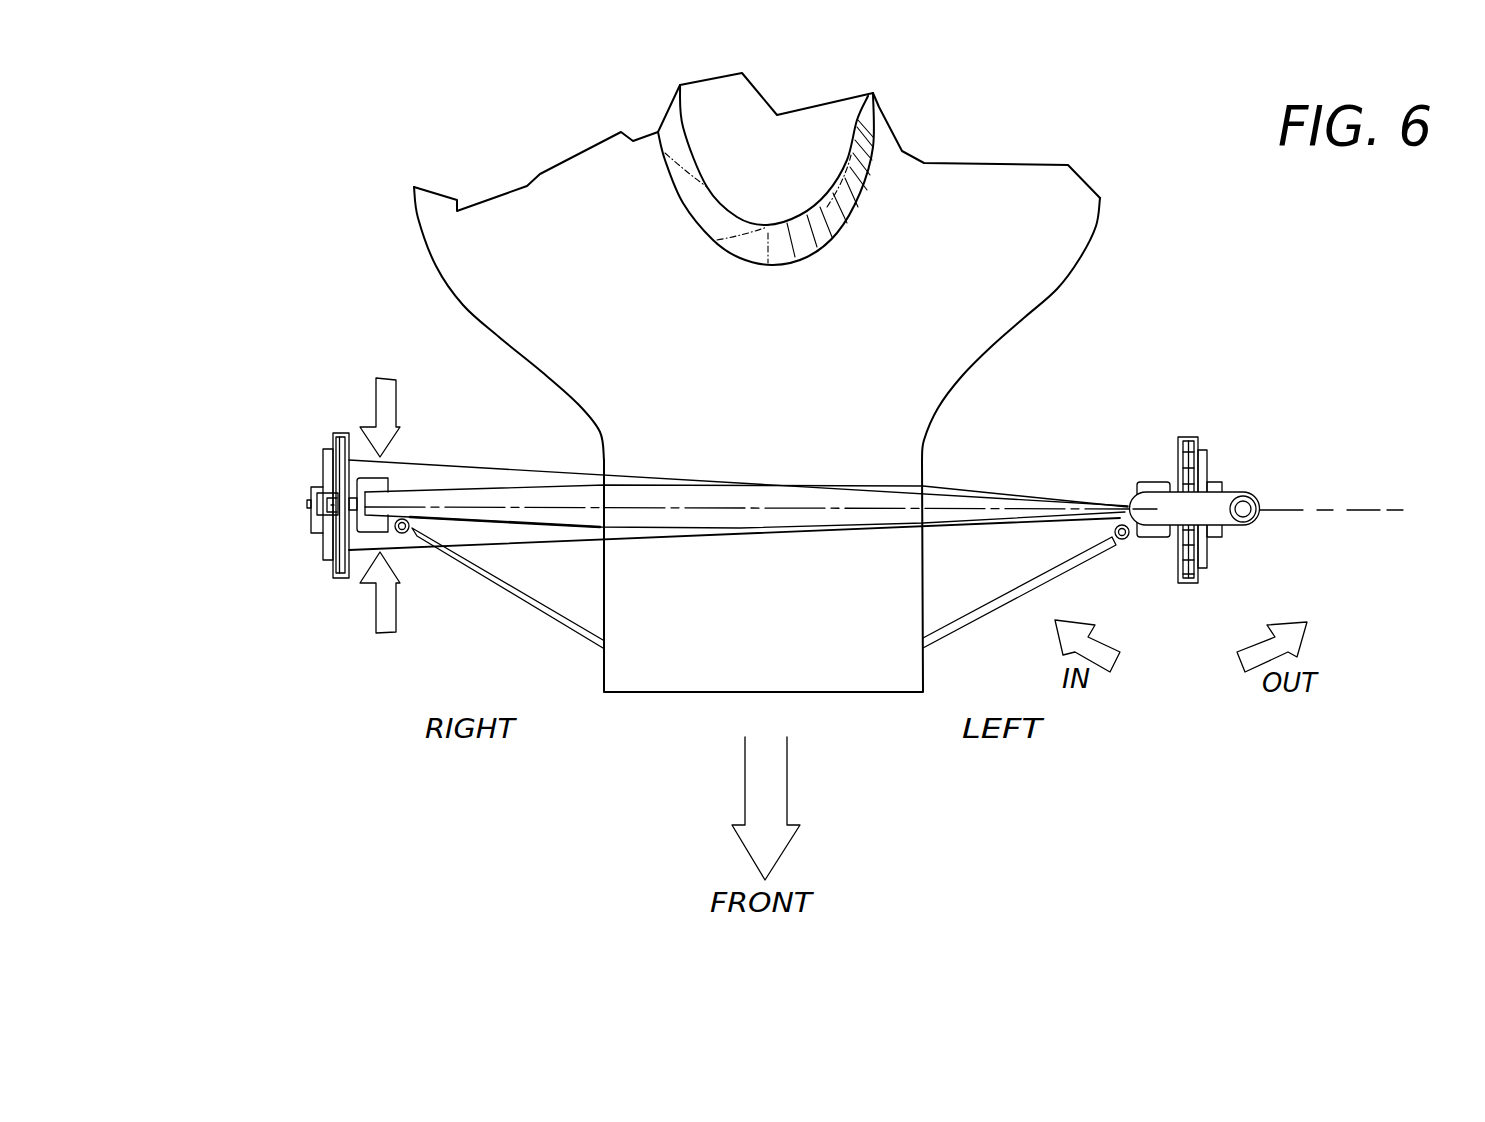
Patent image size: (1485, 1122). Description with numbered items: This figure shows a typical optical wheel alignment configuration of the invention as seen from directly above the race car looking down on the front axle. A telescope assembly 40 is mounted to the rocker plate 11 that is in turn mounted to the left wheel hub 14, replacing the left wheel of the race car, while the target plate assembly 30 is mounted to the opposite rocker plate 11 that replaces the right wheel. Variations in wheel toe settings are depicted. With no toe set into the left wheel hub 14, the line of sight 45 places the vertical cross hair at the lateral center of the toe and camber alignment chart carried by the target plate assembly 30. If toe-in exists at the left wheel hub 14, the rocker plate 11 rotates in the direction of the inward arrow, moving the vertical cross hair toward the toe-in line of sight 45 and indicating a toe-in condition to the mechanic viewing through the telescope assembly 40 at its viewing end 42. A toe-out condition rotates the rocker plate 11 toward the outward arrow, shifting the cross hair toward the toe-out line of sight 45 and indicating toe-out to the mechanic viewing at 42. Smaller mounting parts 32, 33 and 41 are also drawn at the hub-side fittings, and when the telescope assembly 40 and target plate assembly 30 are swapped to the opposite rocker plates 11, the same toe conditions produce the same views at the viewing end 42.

The rocker plate 11 is at (1205, 452).
The left wheel hub 14 is at (1185, 437).
The target plate assembly 30 is at (333, 530).
The fastener 32 is at (307, 508).
The bracket 33 is at (315, 490).
The telescope assembly 40 is at (1243, 527).
The guide plate 41 is at (1222, 492).
The viewing end 42 is at (1257, 520).
The line of sight 45 is at (1295, 510).